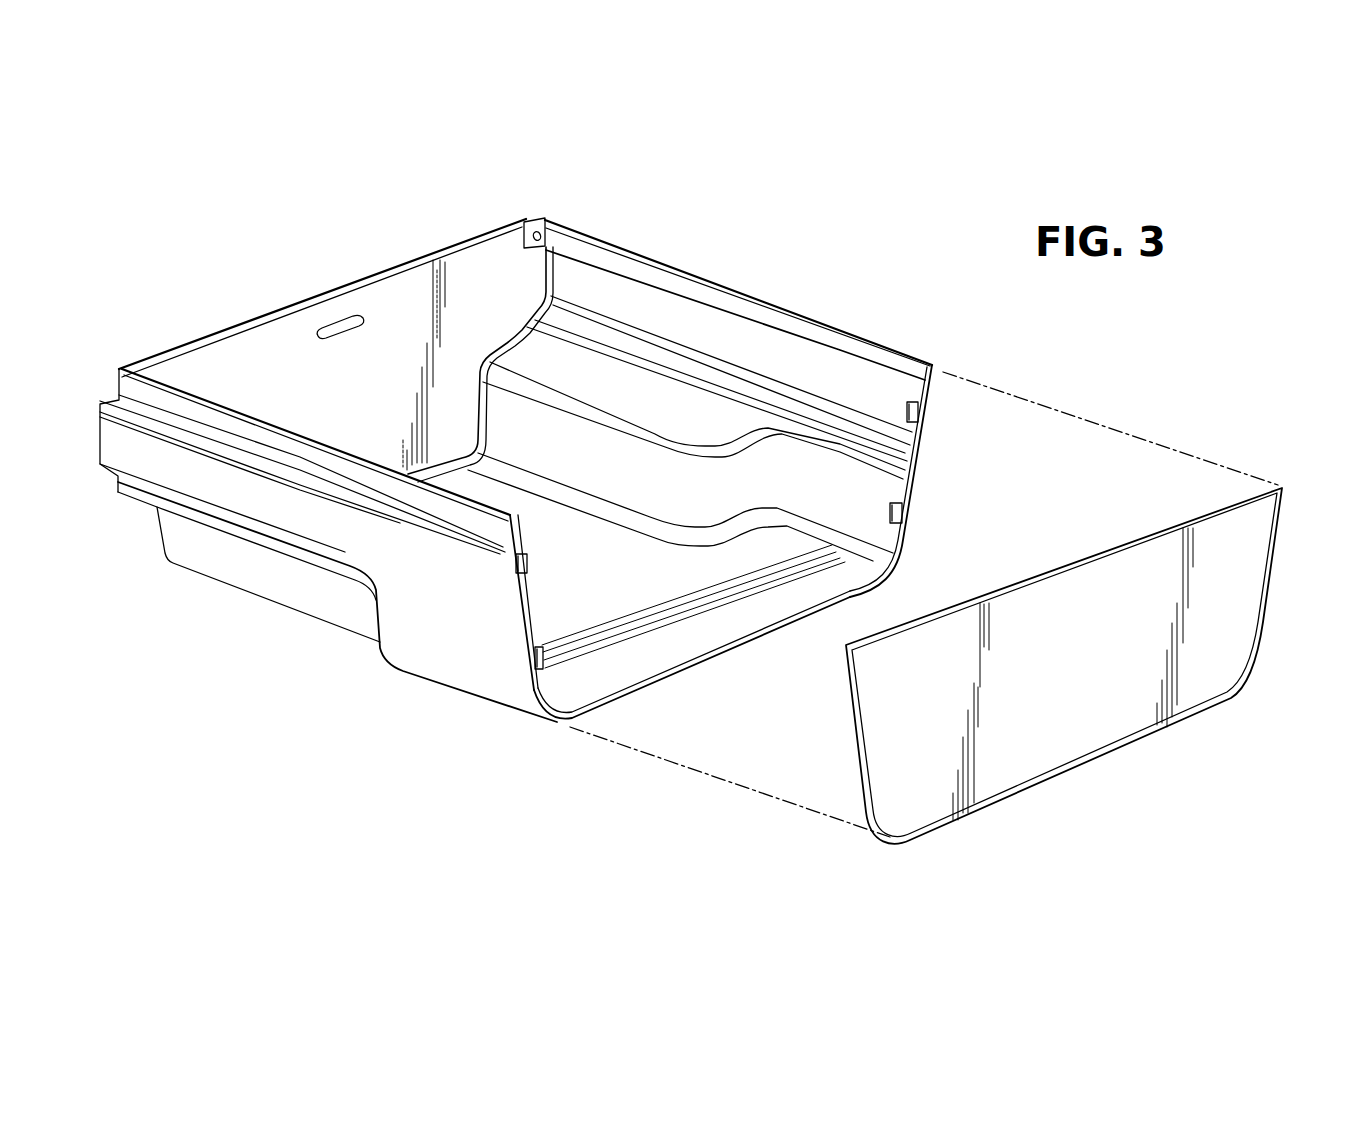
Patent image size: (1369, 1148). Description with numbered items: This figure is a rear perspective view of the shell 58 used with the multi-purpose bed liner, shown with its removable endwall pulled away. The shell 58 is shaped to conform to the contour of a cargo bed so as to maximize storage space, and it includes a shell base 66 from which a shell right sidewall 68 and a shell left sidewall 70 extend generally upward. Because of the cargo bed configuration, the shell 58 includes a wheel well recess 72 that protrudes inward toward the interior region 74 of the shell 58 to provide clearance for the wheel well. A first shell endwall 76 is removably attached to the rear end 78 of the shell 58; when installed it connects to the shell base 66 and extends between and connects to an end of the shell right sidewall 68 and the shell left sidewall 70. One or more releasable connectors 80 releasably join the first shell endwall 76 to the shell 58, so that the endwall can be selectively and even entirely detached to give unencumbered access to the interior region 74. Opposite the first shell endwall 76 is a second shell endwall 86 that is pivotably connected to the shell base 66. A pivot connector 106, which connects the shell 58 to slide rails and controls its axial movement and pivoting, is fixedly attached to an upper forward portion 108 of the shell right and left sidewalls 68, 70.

The shell 58 is at (763, 303).
The shell base 66 is at (721, 635).
The shell right sidewall 68 is at (860, 337).
The shell left sidewall 70 is at (323, 437).
The wheel well recess 72 is at (613, 393).
The interior region 74 is at (522, 446).
The first shell endwall 76 is at (1263, 623).
The rear end 78 is at (918, 455).
The releasable connectors 80 is at (919, 413).
The second shell endwall 86 is at (190, 337).
The pivot connector 106 is at (542, 231).
The upper forward portion 108 is at (557, 243).